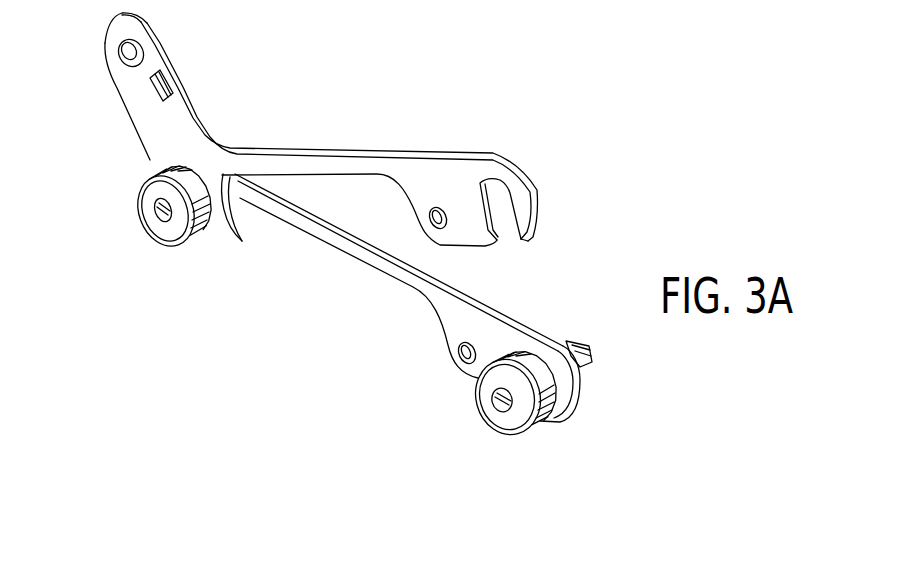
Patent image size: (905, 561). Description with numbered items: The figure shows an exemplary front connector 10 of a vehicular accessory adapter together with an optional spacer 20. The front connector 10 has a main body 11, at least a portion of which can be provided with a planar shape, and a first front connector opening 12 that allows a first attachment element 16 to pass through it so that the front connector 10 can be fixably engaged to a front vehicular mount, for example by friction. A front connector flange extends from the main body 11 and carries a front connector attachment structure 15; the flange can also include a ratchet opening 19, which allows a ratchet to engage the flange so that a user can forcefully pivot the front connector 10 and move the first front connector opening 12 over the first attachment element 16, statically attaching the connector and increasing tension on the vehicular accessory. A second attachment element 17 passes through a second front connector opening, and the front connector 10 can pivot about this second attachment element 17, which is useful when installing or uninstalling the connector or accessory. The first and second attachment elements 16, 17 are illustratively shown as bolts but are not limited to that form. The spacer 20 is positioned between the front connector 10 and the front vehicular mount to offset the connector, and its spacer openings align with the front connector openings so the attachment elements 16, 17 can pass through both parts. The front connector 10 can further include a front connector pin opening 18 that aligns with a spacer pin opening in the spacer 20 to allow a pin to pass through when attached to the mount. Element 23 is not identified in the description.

The front connector 10 is at (600, 220).
The main body 11 is at (301, 159).
The first front connector opening 12 is at (508, 218).
The front connector attachment structure 15 is at (118, 50).
The first attachment element 16 is at (533, 430).
The second attachment element 17 is at (197, 237).
The front connector pin opening 18 is at (430, 210).
The ratchet opening 19 is at (173, 70).
The spacer 20 is at (365, 252).
The hole 23 is at (453, 355).